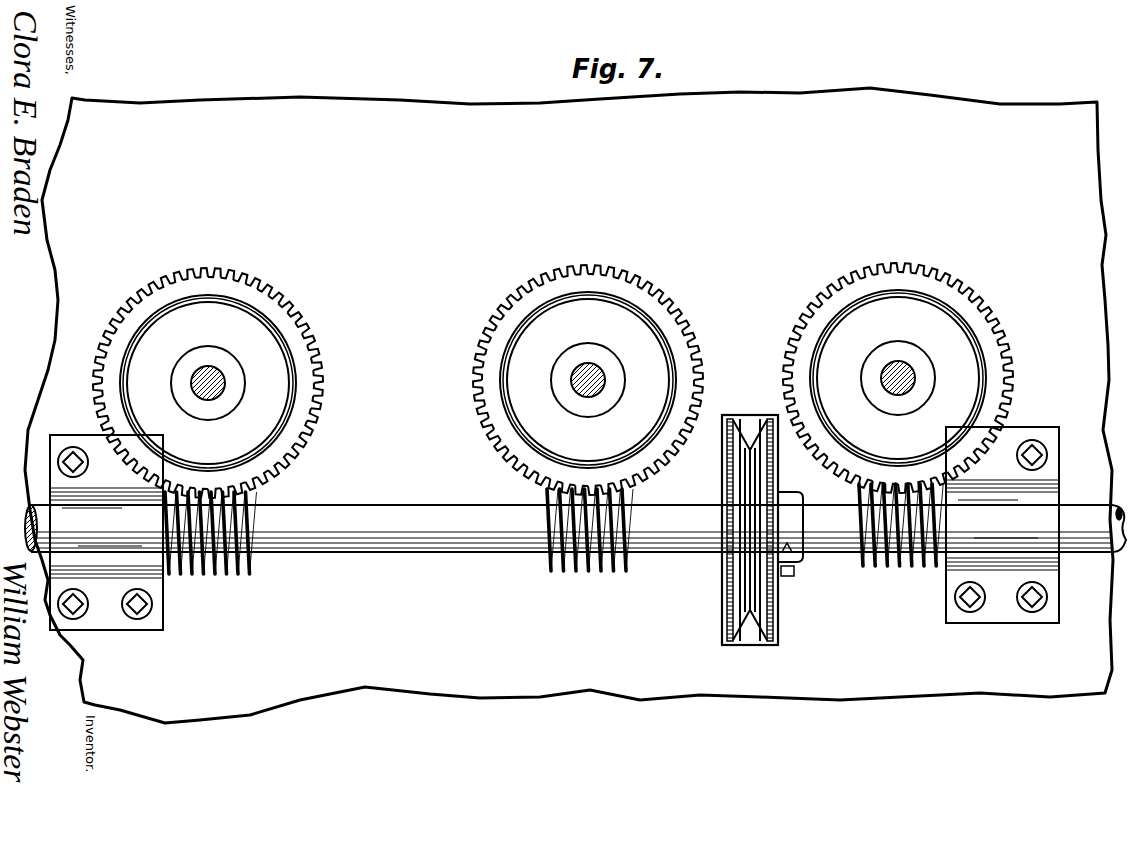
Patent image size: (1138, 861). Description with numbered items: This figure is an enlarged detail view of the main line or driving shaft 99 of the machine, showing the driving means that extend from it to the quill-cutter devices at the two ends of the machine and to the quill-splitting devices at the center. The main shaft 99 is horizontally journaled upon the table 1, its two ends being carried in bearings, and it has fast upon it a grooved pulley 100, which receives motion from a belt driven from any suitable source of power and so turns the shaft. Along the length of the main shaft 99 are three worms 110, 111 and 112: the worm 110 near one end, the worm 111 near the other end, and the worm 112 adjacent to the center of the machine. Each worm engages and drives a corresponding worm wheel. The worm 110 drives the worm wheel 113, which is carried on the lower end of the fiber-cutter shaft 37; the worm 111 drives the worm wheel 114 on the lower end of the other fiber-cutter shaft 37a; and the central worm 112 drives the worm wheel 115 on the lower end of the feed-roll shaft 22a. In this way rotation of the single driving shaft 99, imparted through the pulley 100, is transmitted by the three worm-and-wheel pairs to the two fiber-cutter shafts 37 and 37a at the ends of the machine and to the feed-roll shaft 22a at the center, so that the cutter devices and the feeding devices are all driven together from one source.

The table 1 is at (600, 668).
The main line or driving shaft 99 is at (487, 560).
The grooved pulley 100 is at (745, 572).
The worm 110 is at (235, 579).
The worm 111 is at (898, 572).
The worm 112 is at (590, 574).
The worm wheel 113 is at (312, 355).
The worm wheel 114 is at (784, 332).
The worm wheel 115 is at (472, 348).
The fiber-cutter shaft 37 is at (225, 375).
The fiber-cutter shaft 37a is at (913, 370).
The feed-roll shaft 22a is at (600, 373).